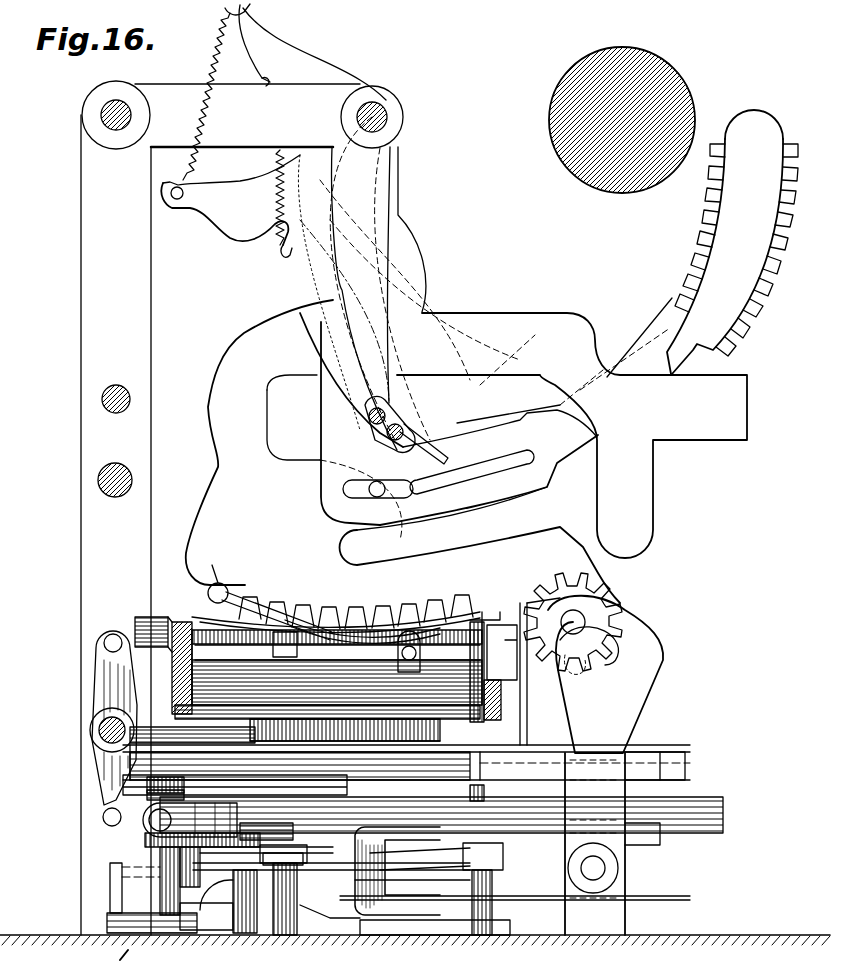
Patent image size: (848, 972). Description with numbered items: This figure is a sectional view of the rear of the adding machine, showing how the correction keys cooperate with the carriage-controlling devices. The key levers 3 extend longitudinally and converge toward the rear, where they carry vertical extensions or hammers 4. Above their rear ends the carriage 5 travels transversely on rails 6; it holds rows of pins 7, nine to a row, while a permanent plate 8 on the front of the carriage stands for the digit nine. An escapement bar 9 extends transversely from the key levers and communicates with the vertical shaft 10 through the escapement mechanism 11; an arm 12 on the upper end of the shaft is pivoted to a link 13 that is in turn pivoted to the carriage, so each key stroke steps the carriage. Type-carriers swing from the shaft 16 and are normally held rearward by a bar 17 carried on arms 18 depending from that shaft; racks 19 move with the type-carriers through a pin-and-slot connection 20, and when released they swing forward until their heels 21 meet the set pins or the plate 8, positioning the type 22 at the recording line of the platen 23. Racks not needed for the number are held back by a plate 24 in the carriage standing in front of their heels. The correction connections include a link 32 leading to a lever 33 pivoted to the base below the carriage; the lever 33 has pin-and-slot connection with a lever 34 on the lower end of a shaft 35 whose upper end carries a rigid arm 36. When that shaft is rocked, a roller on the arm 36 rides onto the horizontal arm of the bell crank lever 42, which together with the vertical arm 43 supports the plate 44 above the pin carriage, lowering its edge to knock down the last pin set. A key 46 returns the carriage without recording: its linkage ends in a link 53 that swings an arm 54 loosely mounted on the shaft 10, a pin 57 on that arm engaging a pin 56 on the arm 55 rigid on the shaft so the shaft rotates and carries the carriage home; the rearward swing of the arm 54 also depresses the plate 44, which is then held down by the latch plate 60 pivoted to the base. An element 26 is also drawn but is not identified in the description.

The key levers 3 is at (446, 815).
The vertical extensions or hammers 4 is at (235, 787).
The carriage 5 is at (306, 677).
The rails 6 is at (175, 700).
The pins 7 is at (470, 687).
The permanent plate 8 is at (493, 646).
The escapement bar 9 is at (483, 794).
The vertical shaft 10 is at (383, 889).
The escapement mechanism 11 is at (406, 762).
The arm 12 is at (324, 661).
The link 13 is at (409, 661).
The shaft 16 is at (387, 117).
The bar 17 is at (405, 418).
The arms 18 is at (338, 300).
The racks 19 is at (466, 451).
The pin-and-slot connection 20 is at (383, 470).
The heels 21 is at (226, 568).
The type 22 is at (704, 198).
The paper carriage or platen 23 is at (632, 38).
The plate 24 is at (290, 610).
The block 26 is at (500, 702).
The link 32 is at (526, 897).
The lever 33 is at (196, 881).
The lever 34 is at (206, 916).
The shaft 35 is at (245, 901).
The arm 36 is at (190, 820).
The bell crank lever 42 is at (189, 840).
The vertical arm 43 is at (545, 732).
The plate 44 is at (362, 632).
The key 46 is at (122, 813).
The link 53 is at (660, 840).
The arm 54 is at (412, 871).
The arm 55 is at (266, 854).
The pin 56 is at (266, 831).
The pin 57 is at (331, 852).
The latch plate 60 is at (405, 927).